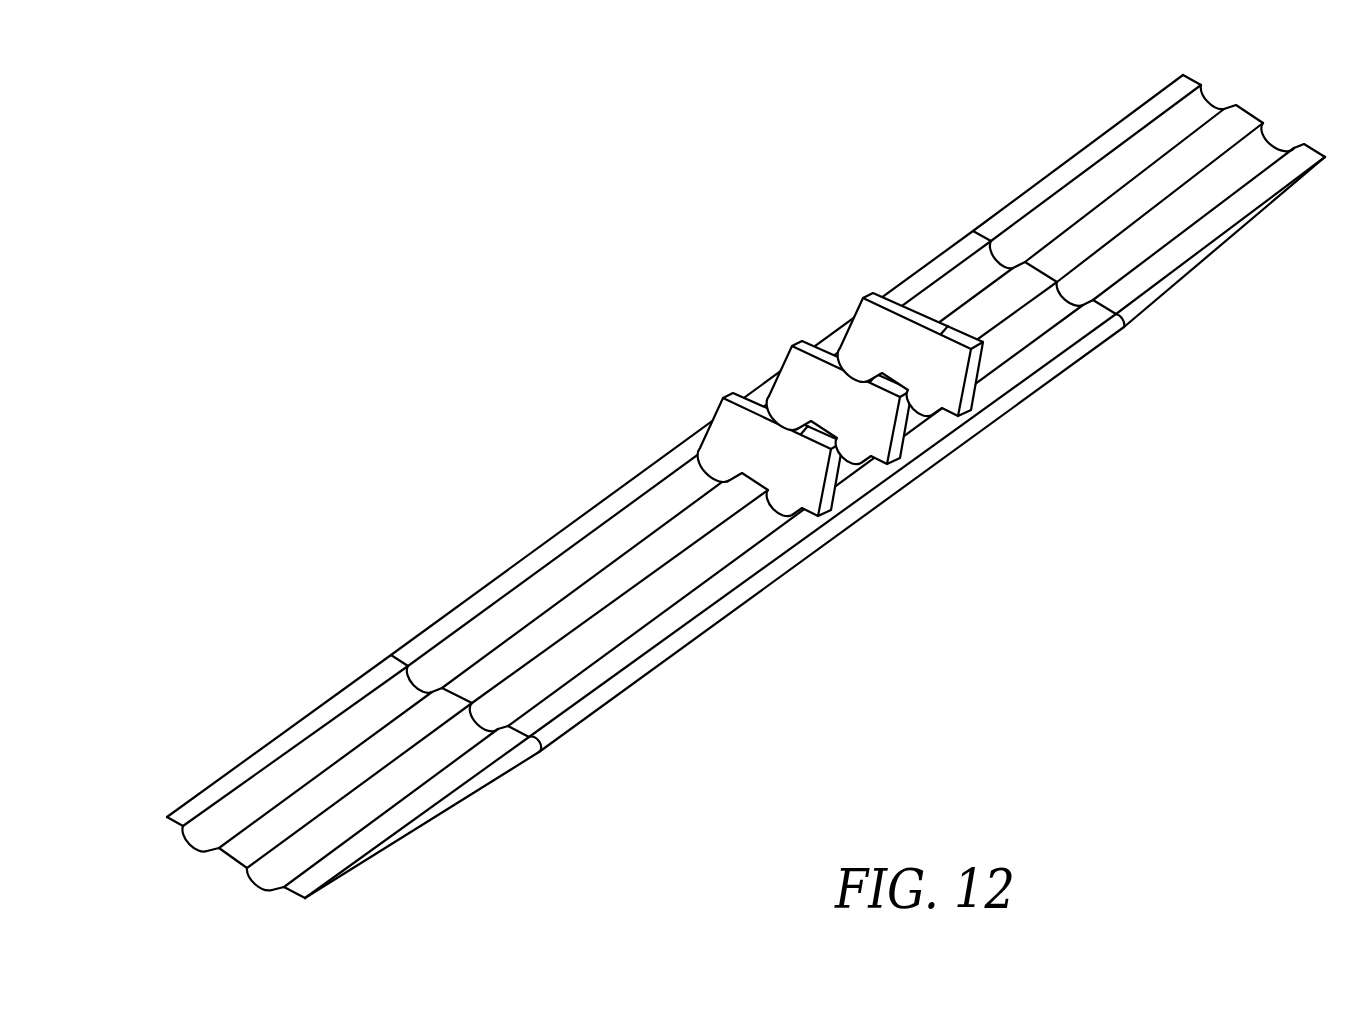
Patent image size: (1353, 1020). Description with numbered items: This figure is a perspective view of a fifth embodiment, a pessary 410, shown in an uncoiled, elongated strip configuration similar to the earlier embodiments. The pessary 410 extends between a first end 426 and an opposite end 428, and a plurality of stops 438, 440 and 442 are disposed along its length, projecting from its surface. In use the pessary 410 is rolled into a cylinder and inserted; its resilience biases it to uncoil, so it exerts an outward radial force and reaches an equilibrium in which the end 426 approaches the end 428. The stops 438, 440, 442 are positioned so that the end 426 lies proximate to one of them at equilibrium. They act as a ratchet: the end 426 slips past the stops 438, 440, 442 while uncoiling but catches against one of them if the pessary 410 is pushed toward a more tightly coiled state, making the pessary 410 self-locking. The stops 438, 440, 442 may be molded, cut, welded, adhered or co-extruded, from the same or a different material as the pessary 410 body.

The pessary 410 is at (660, 394).
The end 426 is at (233, 857).
The end 428 is at (1263, 113).
The stop 438 is at (873, 323).
The stop 440 is at (802, 370).
The stop 442 is at (732, 405).